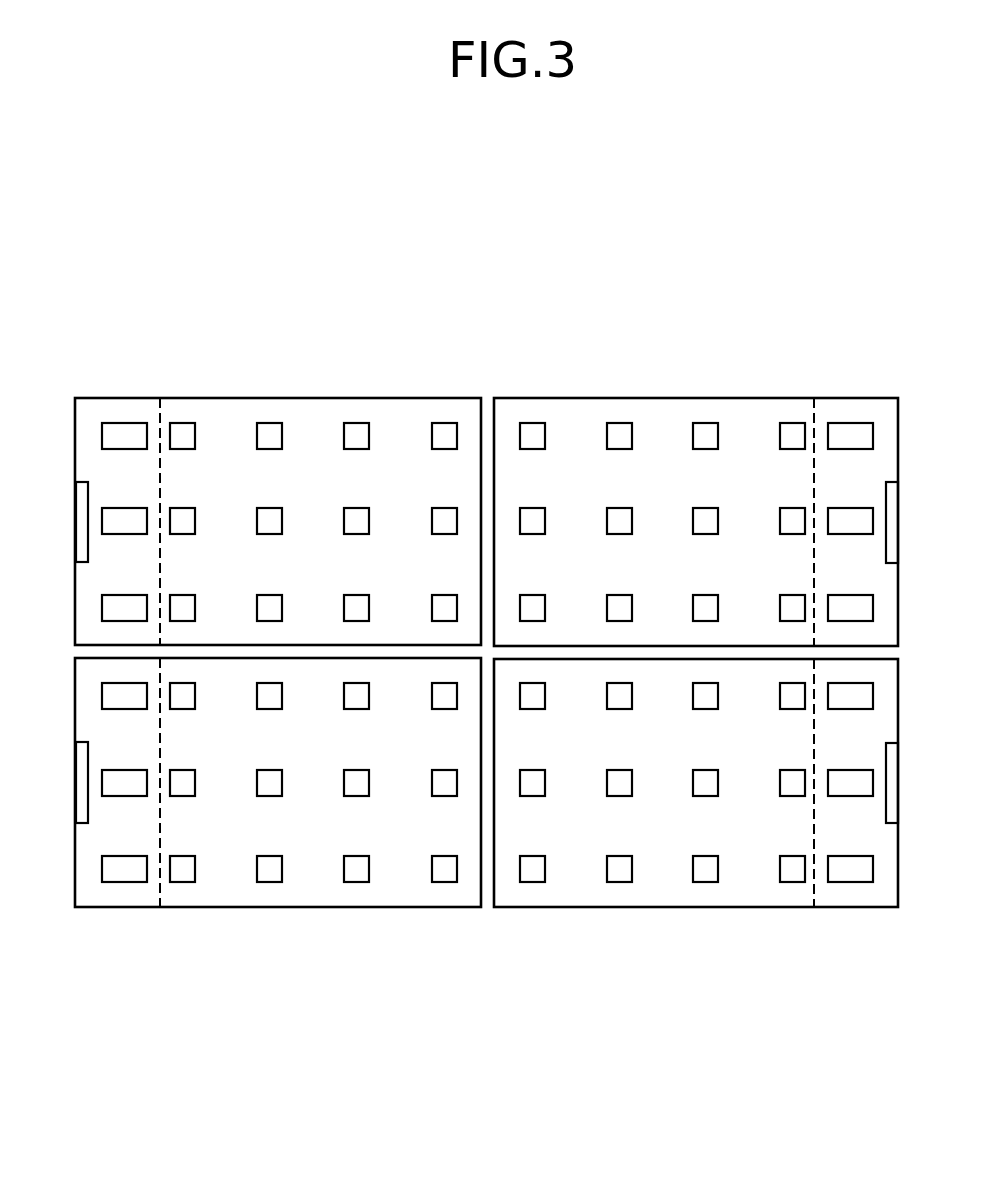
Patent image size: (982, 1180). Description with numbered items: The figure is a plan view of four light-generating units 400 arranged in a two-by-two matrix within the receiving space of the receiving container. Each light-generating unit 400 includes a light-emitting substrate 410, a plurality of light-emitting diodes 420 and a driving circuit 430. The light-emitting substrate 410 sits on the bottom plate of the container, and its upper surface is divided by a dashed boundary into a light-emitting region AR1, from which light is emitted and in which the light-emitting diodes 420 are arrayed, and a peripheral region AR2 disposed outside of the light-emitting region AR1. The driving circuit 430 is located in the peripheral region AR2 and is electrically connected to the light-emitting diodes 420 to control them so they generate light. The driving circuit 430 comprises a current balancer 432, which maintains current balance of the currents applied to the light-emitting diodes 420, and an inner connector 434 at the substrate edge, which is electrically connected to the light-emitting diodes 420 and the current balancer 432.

The light-generating unit 400 is at (377, 283).
The light-emitting substrate 410 is at (355, 410).
The light-emitting diodes 420 is at (267, 403).
The driving circuit 430 is at (148, 330).
The current balancer 432 is at (125, 403).
The inner connector 434 is at (80, 498).
The light-emitting region AR1 is at (217, 906).
The peripheral region AR2 is at (120, 906).